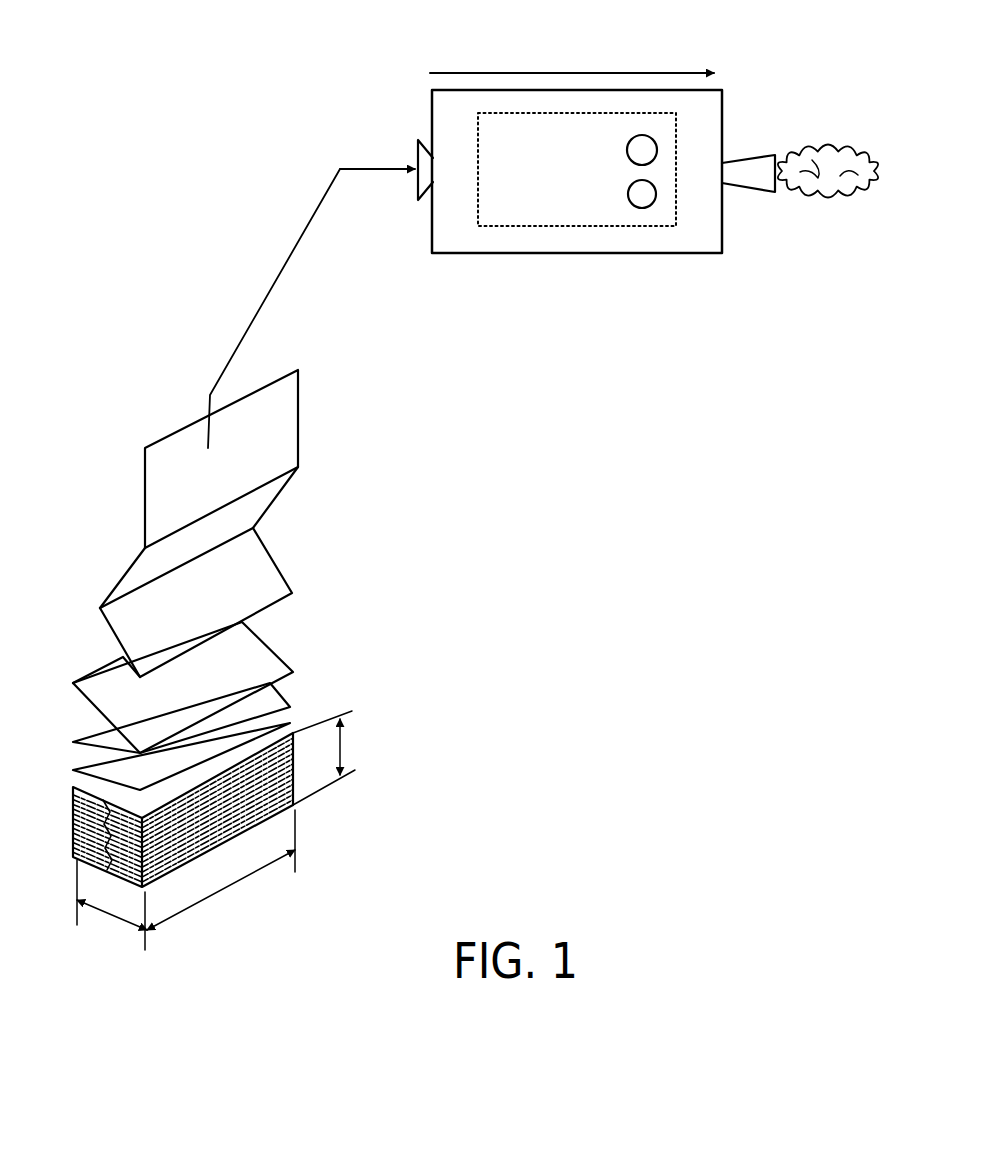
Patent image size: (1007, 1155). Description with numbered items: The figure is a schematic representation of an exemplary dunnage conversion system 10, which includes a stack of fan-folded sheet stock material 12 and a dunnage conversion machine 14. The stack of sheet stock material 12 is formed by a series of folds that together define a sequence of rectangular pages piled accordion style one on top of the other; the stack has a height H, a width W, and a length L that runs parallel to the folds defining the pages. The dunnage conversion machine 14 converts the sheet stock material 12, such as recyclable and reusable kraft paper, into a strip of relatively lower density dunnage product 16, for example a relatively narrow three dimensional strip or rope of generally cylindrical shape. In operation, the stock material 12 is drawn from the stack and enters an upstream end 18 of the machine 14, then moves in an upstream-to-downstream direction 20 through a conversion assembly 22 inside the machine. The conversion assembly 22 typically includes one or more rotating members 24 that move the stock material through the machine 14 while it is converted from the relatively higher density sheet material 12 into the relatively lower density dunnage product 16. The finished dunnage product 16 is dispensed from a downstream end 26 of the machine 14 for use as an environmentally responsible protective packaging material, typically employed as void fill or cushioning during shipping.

The dunnage conversion system 10 is at (225, 133).
The stack of fan-folded sheet stock material 12 is at (167, 482).
The dunnage conversion machine 14 is at (463, 251).
The dunnage product 16 is at (847, 188).
The upstream end 18 is at (410, 127).
The upstream-to-downstream direction 20 is at (535, 73).
The conversion assembly 22 is at (560, 227).
The rotating members 24 is at (645, 214).
The downstream end 26 is at (762, 125).